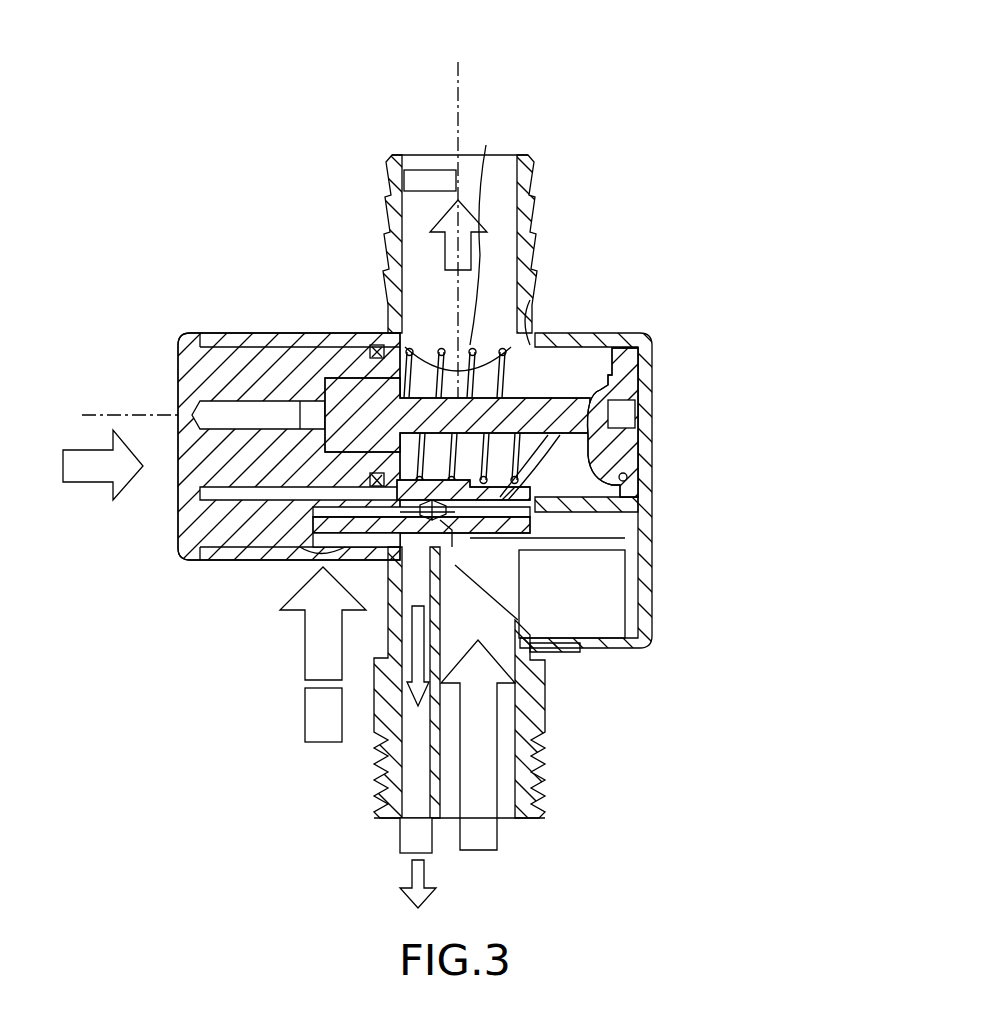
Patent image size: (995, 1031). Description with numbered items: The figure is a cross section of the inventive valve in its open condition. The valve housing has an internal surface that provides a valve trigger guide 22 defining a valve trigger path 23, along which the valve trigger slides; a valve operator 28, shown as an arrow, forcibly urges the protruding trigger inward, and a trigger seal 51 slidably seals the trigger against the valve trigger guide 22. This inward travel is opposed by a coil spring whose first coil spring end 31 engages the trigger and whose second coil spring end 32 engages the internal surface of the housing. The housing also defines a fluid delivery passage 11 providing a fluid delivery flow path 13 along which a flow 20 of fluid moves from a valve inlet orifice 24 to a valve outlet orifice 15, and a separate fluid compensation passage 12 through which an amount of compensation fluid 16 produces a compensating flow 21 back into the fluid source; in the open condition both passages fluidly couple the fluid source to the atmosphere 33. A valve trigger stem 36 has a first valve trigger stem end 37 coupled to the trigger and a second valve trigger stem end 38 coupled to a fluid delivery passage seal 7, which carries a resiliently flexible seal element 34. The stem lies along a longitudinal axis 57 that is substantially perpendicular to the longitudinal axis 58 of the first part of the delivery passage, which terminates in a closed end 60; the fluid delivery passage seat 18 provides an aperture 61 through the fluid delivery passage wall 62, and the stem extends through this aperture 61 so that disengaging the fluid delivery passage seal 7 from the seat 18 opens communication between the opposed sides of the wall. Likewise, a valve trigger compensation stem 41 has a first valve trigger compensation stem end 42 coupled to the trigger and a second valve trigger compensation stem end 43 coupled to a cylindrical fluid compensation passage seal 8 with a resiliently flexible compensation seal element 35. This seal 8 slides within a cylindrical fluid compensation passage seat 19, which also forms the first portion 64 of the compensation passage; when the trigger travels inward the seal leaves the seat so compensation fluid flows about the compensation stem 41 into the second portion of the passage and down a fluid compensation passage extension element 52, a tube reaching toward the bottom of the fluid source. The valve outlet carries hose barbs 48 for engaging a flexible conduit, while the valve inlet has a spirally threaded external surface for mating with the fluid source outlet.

The fluid delivery passage seal 7 is at (620, 385).
The fluid compensation passage seal 8 is at (445, 530).
The fluid delivery passage 11 is at (513, 266).
The fluid compensation passage 12 is at (400, 707).
The fluid delivery flow path 13 is at (479, 621).
The valve outlet orifice 15 is at (421, 146).
The amount of compensation fluid 16 is at (323, 715).
The fluid delivery passage seat 18 is at (533, 345).
The fluid compensation passage seat 19 is at (352, 500).
The flow 20 is at (560, 347).
The compensating flow 21 is at (365, 747).
The valve trigger guide 22 is at (300, 347).
The valve trigger path 23 is at (410, 333).
The valve inlet orifice 24 is at (510, 827).
The valve operator 28 is at (103, 465).
The first coil spring end 31 is at (398, 345).
The second coil spring end 32 is at (500, 500).
The atmosphere 33 is at (443, 448).
The resiliently flexible seal element 34 is at (628, 348).
The resiliently flexible compensation seal element 35 is at (455, 512).
The valve trigger stem 36 is at (450, 398).
The first valve trigger stem end 37 is at (290, 415).
The second valve trigger stem end 38 is at (640, 415).
The valve trigger compensation stem 41 is at (370, 533).
The first valve trigger compensation stem end 42 is at (305, 550).
The second valve trigger compensation stem end 43 is at (425, 520).
The hose barbs 48 is at (386, 182).
The trigger seal 51 is at (372, 345).
The fluid compensation passage extension element 52 is at (405, 837).
The longitudinal axis 57 is at (327, 414).
The longitudinal axis 58 is at (460, 215).
The closed end 60 is at (480, 485).
The aperture 61 is at (558, 459).
The fluid delivery passage wall 62 is at (537, 302).
The first portion of the fluid compensation passage 64 is at (378, 560).